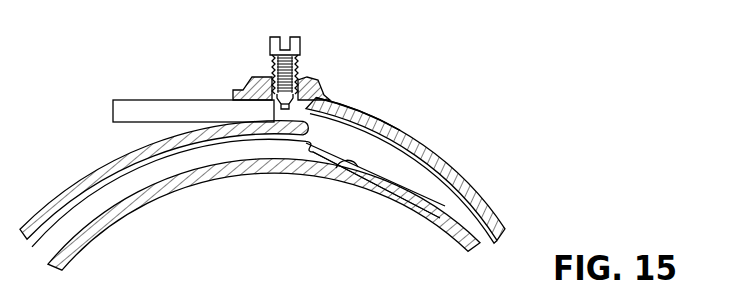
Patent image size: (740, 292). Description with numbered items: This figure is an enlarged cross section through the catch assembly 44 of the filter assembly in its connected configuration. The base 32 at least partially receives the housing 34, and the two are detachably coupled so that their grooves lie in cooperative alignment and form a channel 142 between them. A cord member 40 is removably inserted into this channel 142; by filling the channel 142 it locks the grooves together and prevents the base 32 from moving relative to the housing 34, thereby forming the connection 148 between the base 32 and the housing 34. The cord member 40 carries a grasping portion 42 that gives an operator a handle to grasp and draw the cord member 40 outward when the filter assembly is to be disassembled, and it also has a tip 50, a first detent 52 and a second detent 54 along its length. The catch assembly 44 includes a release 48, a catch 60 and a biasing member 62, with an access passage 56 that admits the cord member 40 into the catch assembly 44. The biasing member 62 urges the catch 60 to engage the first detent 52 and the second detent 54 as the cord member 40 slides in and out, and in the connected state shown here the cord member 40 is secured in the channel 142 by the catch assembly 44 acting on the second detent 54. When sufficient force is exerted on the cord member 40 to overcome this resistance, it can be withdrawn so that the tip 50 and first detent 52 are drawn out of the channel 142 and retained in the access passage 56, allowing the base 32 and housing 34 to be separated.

The base 32 is at (67, 189).
The housing 34 is at (155, 200).
The cord member 40 is at (374, 117).
The grasping portion 42 is at (125, 100).
The catch assembly 44 is at (283, 61).
The release 48 is at (319, 61).
The tip 50 is at (327, 164).
The first detent 52 is at (312, 132).
The second detent 54 is at (284, 108).
The access passage 56 is at (214, 97).
The catch 60 is at (300, 93).
The biasing member 62 is at (300, 62).
The channel 142 is at (346, 171).
The connection 148 is at (408, 152).